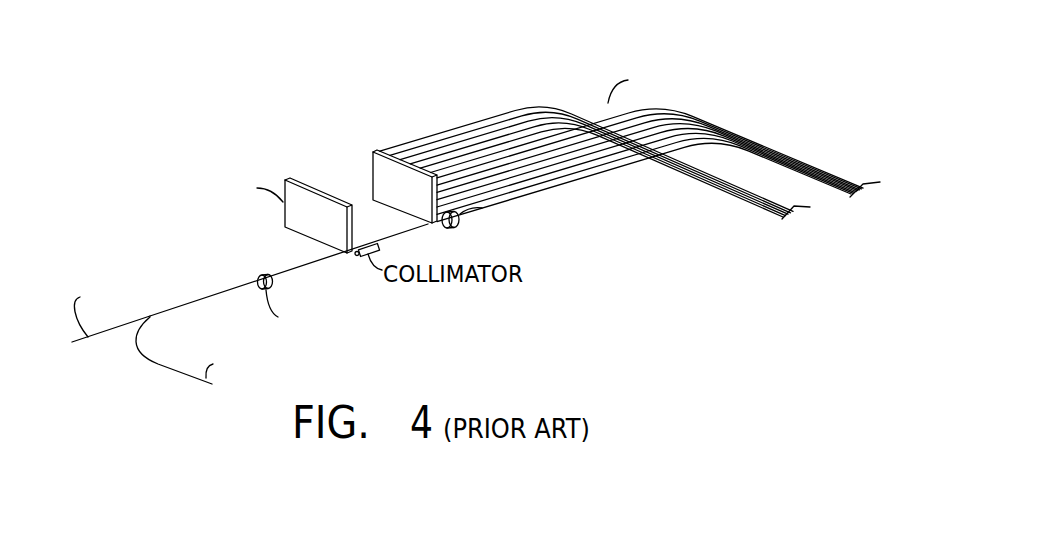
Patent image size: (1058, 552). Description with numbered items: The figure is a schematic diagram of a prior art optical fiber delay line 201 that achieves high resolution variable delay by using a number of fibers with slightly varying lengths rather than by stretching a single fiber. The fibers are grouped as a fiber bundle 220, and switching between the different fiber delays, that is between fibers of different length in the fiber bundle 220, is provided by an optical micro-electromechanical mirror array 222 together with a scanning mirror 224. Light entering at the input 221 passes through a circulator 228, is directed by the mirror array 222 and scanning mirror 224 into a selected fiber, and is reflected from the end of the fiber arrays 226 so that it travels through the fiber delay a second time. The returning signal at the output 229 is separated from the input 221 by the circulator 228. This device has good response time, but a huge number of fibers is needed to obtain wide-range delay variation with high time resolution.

The delay line 201 is at (323, 62).
The fiber bundle 220 is at (592, 103).
The input 221 is at (75, 345).
The optical micro-electromechanical mirror array 222 is at (285, 180).
The scanning mirror 224 is at (460, 223).
The end of the fiber arrays 226 is at (851, 194).
The circulator 228 is at (257, 278).
The output 229 is at (208, 386).